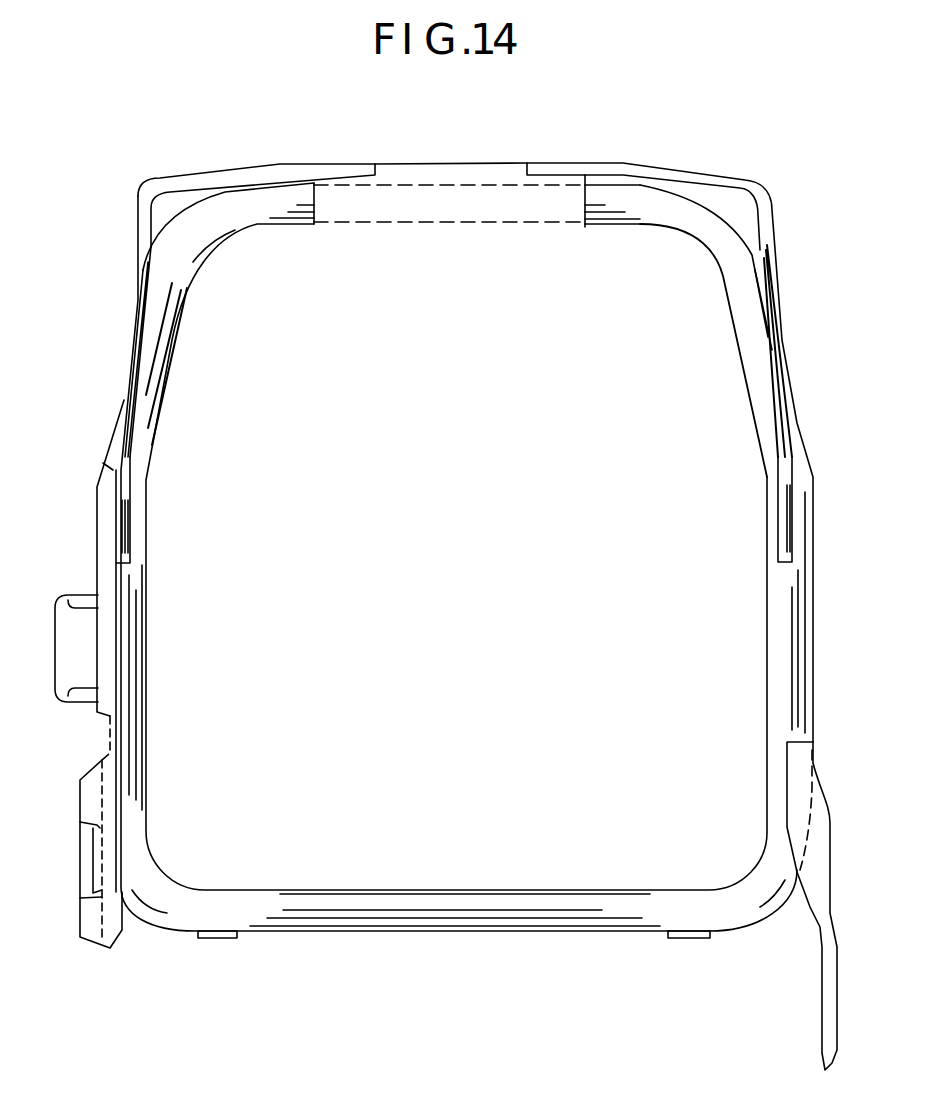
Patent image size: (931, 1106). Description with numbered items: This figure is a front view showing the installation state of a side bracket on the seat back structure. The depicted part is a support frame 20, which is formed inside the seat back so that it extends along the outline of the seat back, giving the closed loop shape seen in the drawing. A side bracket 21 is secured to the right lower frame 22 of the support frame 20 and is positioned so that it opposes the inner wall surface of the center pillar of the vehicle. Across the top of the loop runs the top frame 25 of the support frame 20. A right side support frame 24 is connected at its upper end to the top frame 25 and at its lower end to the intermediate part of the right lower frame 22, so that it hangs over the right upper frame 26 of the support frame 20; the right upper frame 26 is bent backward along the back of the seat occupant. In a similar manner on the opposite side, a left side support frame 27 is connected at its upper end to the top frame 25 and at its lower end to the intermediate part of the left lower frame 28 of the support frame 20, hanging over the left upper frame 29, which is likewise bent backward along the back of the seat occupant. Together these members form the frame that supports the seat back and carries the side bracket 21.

The support frame 20 is at (187, 213).
The side bracket 21 is at (67, 607).
The right lower frame 22 is at (143, 653).
The right side support frame 24 is at (140, 272).
The top frame 25 is at (293, 197).
The right upper frame 26 is at (172, 325).
The left side support frame 27 is at (730, 187).
The left lower frame 28 is at (782, 648).
The left upper frame 29 is at (730, 290).